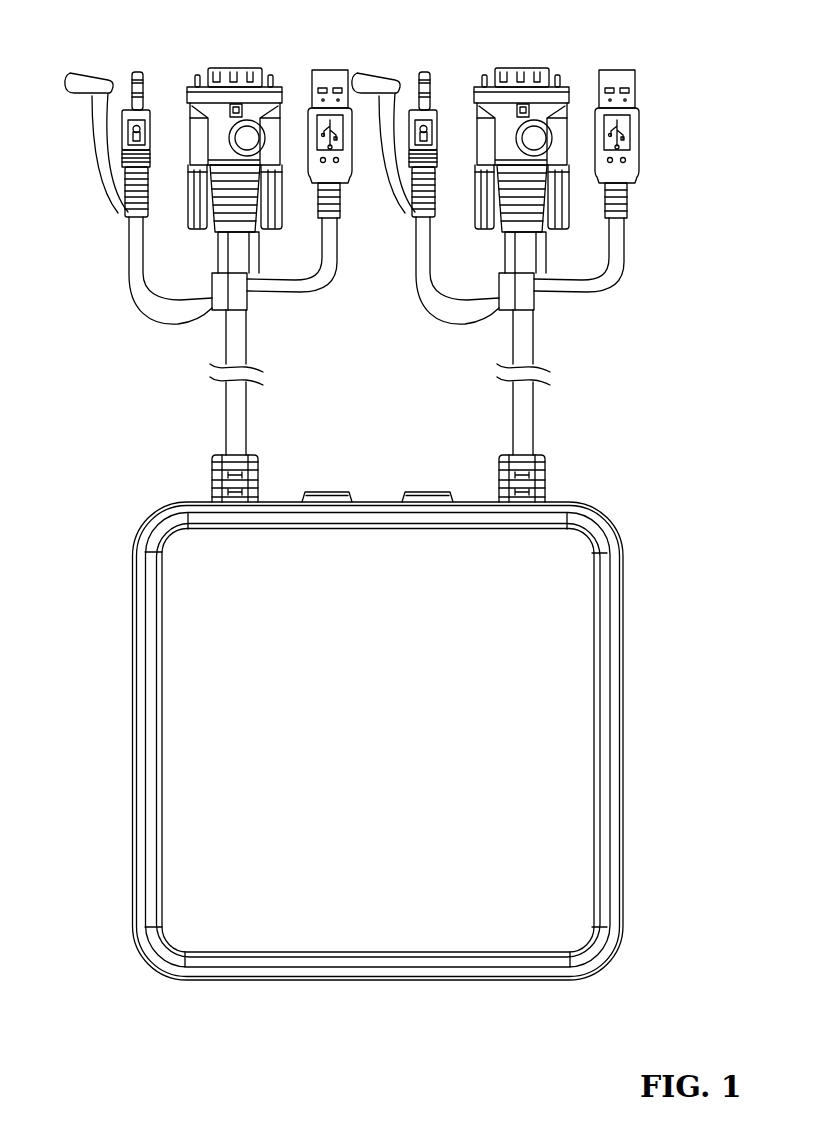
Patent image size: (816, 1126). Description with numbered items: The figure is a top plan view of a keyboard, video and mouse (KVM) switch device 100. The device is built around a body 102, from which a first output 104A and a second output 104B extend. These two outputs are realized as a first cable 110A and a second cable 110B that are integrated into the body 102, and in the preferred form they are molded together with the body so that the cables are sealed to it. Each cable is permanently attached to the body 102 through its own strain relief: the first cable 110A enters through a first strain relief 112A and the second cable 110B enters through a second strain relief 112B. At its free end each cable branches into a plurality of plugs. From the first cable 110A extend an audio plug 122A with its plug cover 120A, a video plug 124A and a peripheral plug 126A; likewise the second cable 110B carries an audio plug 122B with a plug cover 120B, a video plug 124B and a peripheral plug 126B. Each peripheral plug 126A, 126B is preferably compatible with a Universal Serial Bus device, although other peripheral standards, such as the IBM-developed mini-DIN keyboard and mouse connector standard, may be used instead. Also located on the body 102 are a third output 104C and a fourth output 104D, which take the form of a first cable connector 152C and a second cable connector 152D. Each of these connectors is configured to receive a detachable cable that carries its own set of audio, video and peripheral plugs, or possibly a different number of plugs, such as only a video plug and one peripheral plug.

The KVM switch device 100 is at (709, 420).
The body 102 is at (133, 803).
The first output 104A is at (110, 331).
The second output 104B is at (398, 331).
The third output 104C is at (344, 466).
The fourth output 104D is at (447, 466).
The first cable 110A is at (226, 398).
The second cable 110B is at (514, 330).
The first strain relief 112A is at (213, 462).
The second strain relief 112B is at (548, 462).
The plug cover 120A is at (80, 66).
The plug cover 120B is at (378, 68).
The audio plug 122A is at (134, 70).
The audio plug 122B is at (423, 70).
The video plug 124A is at (226, 68).
The video plug 124B is at (514, 68).
The peripheral plug 126A is at (320, 70).
The peripheral plug 126B is at (613, 70).
The first cable connector 152C is at (322, 491).
The second cable connector 152D is at (420, 491).